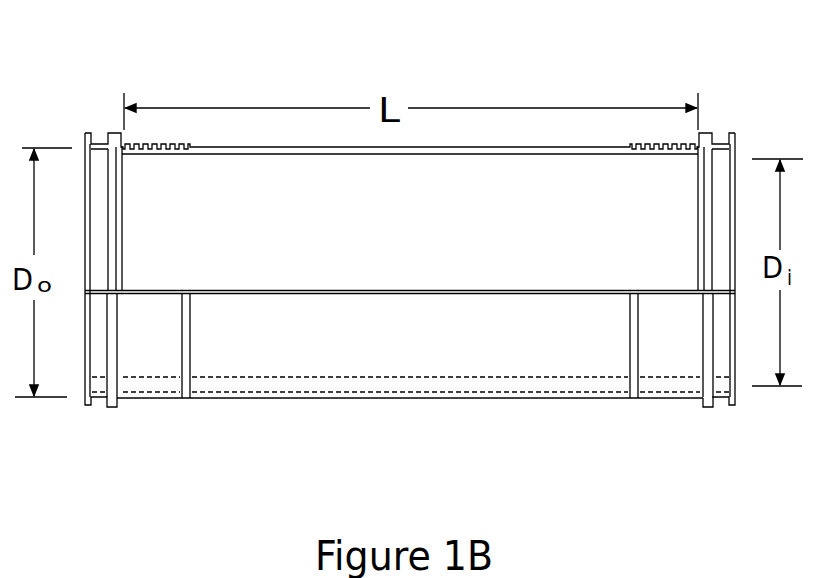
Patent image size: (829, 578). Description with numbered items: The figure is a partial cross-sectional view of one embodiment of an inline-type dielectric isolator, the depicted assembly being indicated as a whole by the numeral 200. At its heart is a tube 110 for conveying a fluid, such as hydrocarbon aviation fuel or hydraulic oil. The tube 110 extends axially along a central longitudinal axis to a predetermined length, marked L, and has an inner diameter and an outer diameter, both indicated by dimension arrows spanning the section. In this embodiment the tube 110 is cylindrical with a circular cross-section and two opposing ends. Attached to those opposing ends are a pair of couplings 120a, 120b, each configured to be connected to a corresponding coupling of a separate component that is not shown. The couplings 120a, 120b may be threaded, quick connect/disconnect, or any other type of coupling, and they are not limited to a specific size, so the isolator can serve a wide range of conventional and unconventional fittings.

The tube assembly 200 is at (147, 81).
The tube 110 is at (328, 398).
The coupling 120a is at (152, 398).
The coupling 120b is at (673, 398).